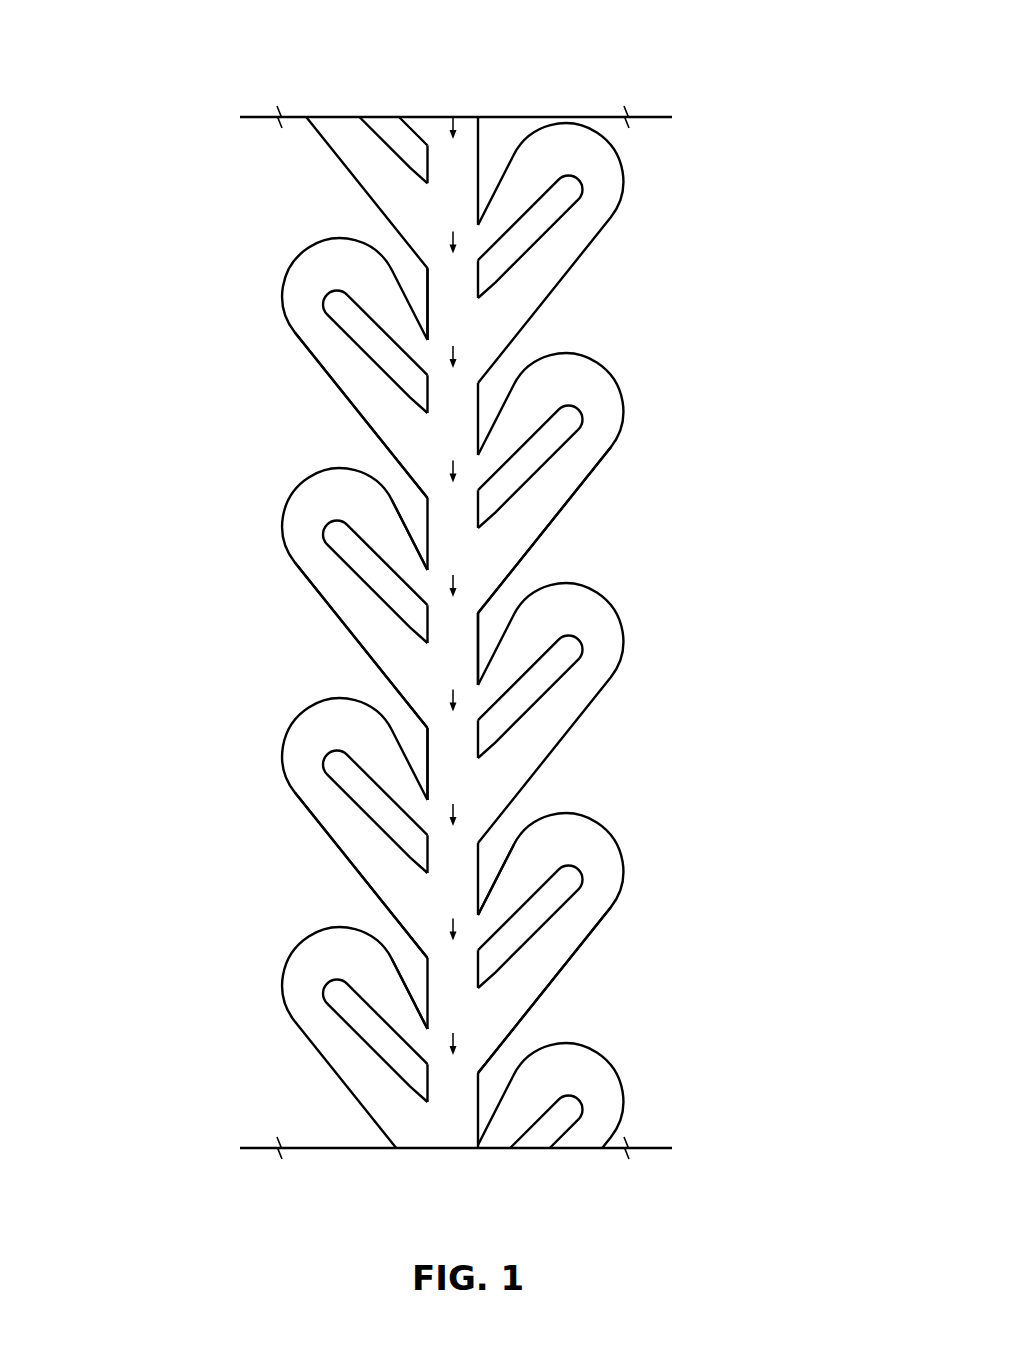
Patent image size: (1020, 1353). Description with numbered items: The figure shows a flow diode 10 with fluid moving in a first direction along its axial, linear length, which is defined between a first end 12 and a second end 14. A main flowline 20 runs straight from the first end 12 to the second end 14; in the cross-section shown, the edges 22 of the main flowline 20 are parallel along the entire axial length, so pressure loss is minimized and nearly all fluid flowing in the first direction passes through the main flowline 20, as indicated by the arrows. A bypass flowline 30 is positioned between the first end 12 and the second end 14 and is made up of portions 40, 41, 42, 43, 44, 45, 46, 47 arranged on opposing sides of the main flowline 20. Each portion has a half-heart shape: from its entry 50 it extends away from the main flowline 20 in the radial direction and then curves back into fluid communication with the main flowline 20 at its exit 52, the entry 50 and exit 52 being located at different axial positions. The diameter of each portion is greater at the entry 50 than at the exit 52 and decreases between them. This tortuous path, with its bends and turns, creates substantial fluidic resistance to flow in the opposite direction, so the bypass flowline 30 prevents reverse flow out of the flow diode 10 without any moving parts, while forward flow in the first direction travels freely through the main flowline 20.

The flow diode 10 is at (157, 278).
The first end 12 is at (522, 96).
The second end 14 is at (401, 1163).
The main flowline 20 is at (484, 368).
The edges 22 is at (426, 300).
The bypass flowline 30 is at (306, 362).
The portion 40 is at (283, 988).
The portion 41 is at (628, 867).
The portion 42 is at (283, 758).
The portion 43 is at (628, 638).
The portion 44 is at (283, 528).
The portion 45 is at (628, 407).
The portion 46 is at (283, 298).
The portion 47 is at (628, 181).
The entry 50 is at (568, 522).
The exit 52 is at (410, 568).